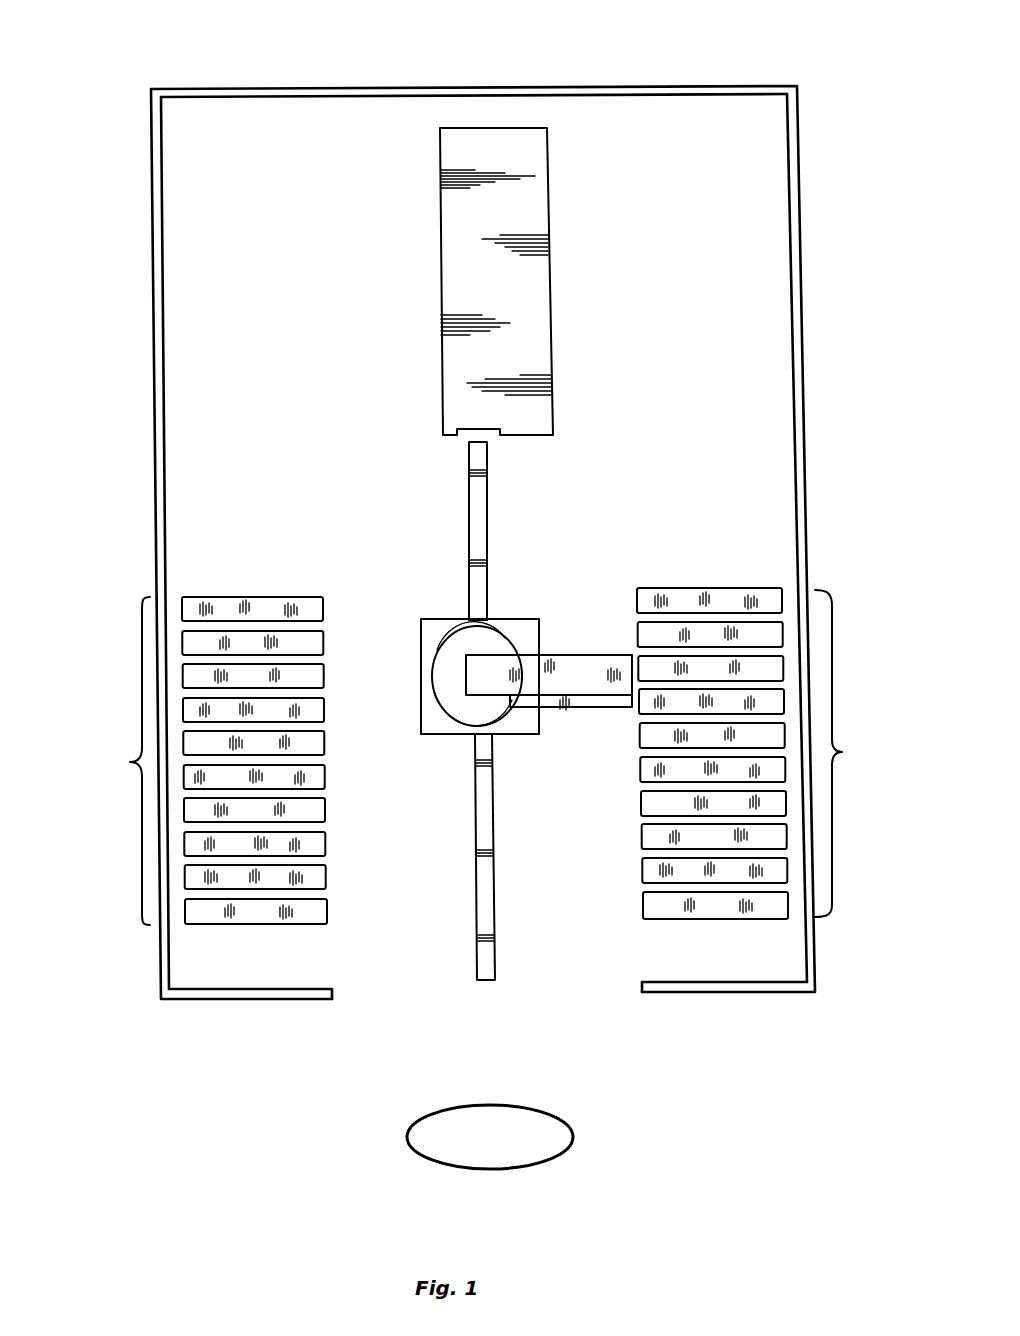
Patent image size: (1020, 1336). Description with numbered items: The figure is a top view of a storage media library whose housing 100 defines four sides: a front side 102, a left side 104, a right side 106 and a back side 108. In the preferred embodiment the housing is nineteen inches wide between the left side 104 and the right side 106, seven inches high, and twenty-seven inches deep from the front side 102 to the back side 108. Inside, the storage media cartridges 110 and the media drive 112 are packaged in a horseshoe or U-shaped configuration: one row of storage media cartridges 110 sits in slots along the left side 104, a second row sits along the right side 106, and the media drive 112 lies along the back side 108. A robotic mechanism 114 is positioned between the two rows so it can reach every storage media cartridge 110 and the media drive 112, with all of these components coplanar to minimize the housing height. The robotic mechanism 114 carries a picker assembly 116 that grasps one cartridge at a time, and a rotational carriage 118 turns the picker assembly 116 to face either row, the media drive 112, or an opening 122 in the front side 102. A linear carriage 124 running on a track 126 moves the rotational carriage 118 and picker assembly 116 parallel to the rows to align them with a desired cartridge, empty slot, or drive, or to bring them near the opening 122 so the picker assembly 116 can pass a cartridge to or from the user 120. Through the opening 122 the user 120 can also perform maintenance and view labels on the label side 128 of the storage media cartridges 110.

The housing 100 is at (152, 207).
The front side 102 is at (266, 1004).
The left side 104 is at (148, 494).
The right side 106 is at (815, 484).
The back side 108 is at (408, 82).
The storage media cartridges 110 is at (488, 757).
The media drive 112 is at (491, 127).
The robotic mechanism 114 is at (435, 598).
The picker assembly 116 is at (588, 660).
The rotational carriage 118 is at (456, 728).
The user 120 is at (573, 1137).
The opening 122 is at (580, 1000).
The linear carriage 124 is at (527, 736).
The track 126 is at (493, 870).
The label side 128 is at (330, 605).